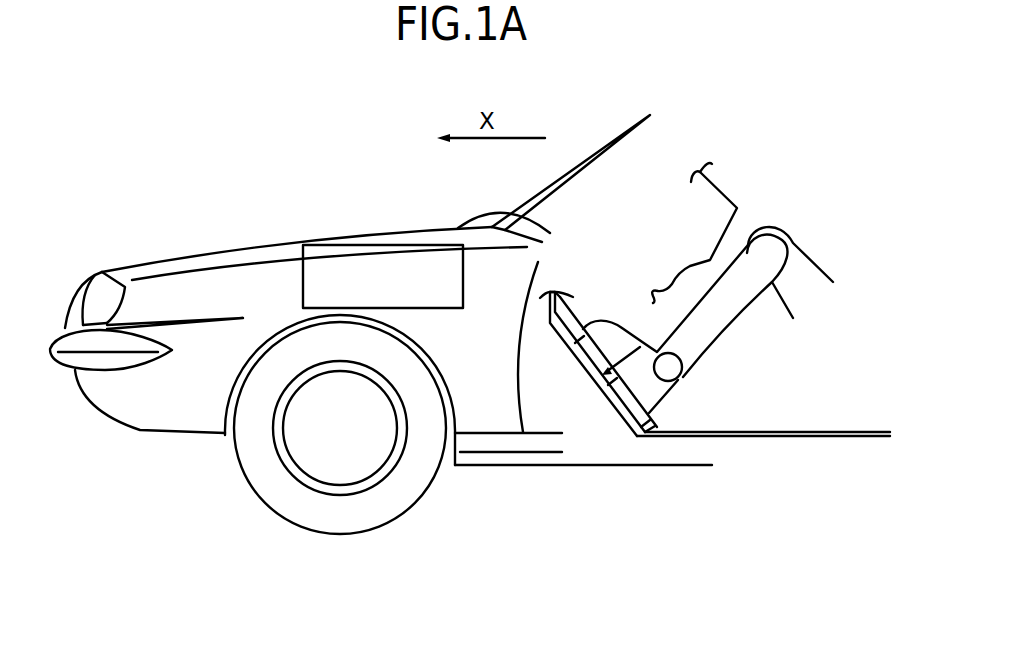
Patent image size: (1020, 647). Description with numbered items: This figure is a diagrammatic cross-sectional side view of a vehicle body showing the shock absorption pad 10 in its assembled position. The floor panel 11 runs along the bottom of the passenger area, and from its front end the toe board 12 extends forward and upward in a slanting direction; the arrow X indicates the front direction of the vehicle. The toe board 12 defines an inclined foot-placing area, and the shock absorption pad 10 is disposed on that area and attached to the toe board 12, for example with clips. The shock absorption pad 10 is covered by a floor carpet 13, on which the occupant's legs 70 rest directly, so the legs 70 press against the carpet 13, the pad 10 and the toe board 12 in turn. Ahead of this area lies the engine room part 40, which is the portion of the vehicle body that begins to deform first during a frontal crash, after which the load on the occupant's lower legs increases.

The shock absorption pad 10 is at (604, 396).
The floor panel 11 is at (752, 437).
The toe board 12 is at (578, 357).
The floor carpet 13 is at (576, 320).
The engine room part 40 is at (357, 245).
The occupant's legs 70 is at (667, 394).